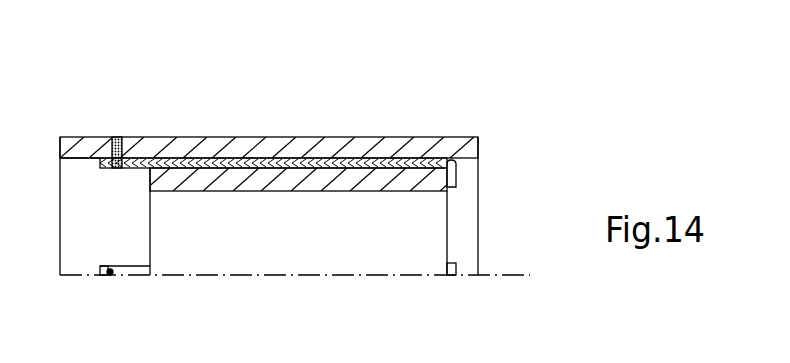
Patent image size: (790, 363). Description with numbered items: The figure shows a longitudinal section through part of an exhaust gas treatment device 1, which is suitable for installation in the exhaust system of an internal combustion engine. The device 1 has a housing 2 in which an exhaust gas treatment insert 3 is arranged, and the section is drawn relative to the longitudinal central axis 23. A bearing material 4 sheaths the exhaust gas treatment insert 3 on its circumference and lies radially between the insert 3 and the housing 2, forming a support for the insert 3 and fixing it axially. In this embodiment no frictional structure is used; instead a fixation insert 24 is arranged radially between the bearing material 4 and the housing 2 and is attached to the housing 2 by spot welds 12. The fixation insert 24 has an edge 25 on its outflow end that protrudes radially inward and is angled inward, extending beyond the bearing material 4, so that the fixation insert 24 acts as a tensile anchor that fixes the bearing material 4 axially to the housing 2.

The exhaust gas treatment device 1 is at (466, 112).
The housing 2 is at (189, 143).
The exhaust gas treatment insert 3 is at (346, 252).
The bearing material 4 is at (283, 193).
The spot weld 12 is at (128, 150).
The longitudinal central axis 23 is at (343, 277).
The fixation insert 24 is at (262, 158).
The edge 25 is at (455, 185).